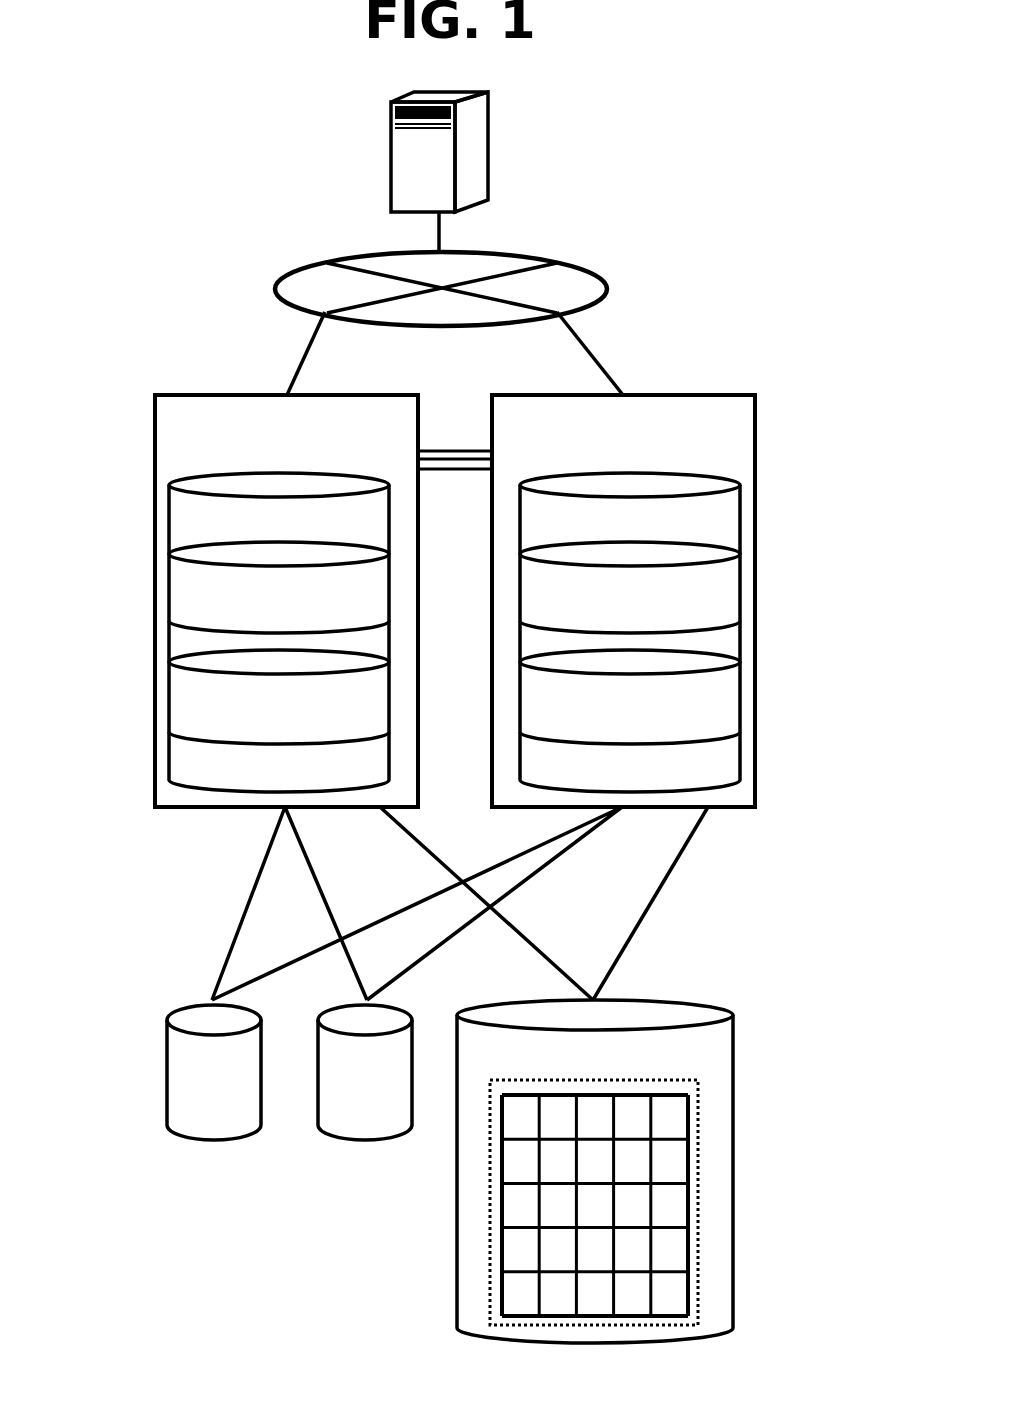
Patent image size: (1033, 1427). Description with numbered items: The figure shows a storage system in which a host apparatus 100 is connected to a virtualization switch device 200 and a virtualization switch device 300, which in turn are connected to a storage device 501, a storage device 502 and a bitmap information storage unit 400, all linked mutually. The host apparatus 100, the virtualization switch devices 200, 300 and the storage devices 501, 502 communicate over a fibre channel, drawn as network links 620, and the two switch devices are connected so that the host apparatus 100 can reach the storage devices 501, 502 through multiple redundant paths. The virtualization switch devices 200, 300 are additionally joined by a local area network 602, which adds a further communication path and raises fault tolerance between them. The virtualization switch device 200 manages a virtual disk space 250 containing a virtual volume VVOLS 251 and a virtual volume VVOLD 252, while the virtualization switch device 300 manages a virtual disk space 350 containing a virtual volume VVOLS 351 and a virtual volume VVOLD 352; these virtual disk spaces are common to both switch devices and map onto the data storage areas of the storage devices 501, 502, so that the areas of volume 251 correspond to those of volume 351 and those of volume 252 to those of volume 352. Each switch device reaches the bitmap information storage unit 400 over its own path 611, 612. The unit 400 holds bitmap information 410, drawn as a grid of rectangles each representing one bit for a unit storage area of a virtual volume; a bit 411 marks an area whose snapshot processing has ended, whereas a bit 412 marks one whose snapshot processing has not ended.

The host apparatus 100 is at (480, 128).
The virtualization switch device 200 is at (172, 393).
The virtual disk space 250 is at (206, 474).
The virtual volume (VVOLS) 251 is at (203, 547).
The virtual volume (VVOLD) 252 is at (206, 665).
The virtualization switch device 300 is at (733, 402).
The virtual disk space 350 is at (697, 489).
The virtual volume (VVOLS) 351 is at (701, 559).
The virtual volume (VVOLD) 352 is at (702, 677).
The bitmap information storage unit 400 is at (697, 1010).
The bitmap information 410 is at (680, 1080).
The bit 411 is at (677, 1108).
The bit 412 is at (678, 1147).
The storage device 501 is at (175, 1118).
The storage device 502 is at (322, 1127).
The local area network (LAN) 602 is at (457, 450).
The path 611 is at (528, 935).
The path from second virtual storage to bitmap volume 612 is at (632, 942).
The network paths 620 is at (307, 340).